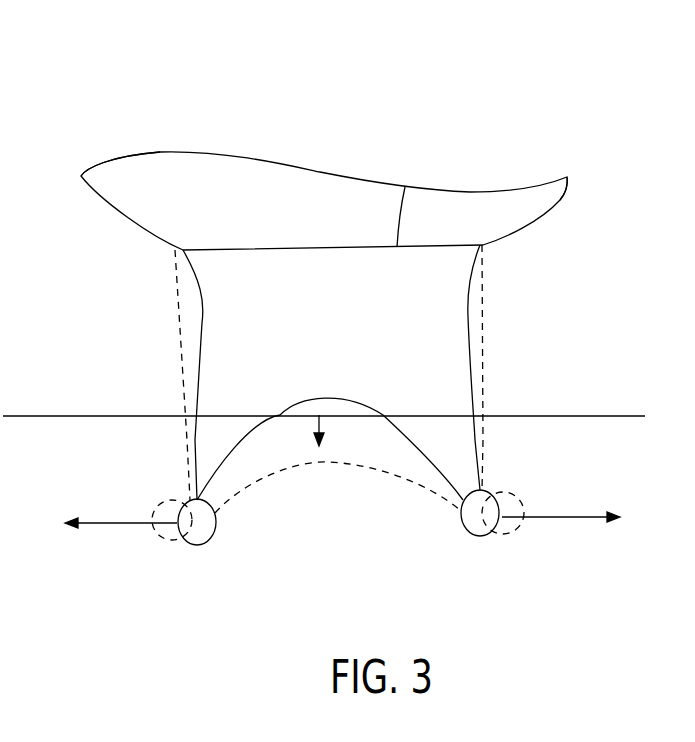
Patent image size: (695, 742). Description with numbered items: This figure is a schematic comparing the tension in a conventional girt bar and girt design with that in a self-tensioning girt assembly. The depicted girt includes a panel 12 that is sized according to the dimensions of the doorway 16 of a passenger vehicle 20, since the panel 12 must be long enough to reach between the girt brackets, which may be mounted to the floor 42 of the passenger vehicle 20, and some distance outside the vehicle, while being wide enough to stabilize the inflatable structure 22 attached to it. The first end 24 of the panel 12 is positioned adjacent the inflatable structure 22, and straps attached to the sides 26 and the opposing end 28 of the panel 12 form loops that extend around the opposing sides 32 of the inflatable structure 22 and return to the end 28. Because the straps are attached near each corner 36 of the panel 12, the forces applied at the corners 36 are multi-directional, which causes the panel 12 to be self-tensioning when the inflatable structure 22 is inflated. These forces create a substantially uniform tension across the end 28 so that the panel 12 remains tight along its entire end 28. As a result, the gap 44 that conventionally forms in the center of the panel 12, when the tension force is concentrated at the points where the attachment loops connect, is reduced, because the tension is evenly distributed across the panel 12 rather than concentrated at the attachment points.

The panel 12 is at (400, 333).
The doorway 16 is at (45, 416).
The passenger vehicle 20 is at (572, 452).
The inflatable structure 22 is at (150, 170).
The first end 24 is at (405, 187).
The sides 26 is at (200, 312).
The opposing end 28 is at (390, 423).
The opposing sides of the inflatable structure 32 is at (97, 182).
The corner 36 is at (200, 492).
The floor 42 is at (91, 452).
The gap 44 is at (295, 430).